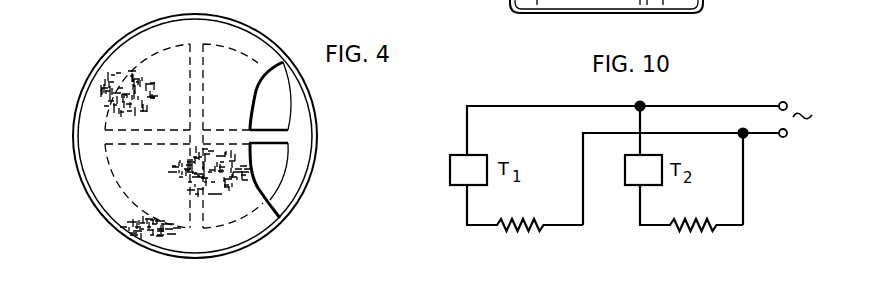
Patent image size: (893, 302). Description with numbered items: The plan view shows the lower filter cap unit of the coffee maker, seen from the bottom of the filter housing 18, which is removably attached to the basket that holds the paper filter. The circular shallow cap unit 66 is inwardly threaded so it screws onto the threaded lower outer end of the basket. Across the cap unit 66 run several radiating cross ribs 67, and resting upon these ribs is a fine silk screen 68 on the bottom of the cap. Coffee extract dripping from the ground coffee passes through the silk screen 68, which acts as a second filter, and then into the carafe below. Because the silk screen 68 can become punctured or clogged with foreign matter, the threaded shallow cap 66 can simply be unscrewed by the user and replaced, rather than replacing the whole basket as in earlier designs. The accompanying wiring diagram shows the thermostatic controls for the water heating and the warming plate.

The filter housing 18 is at (330, 123).
The shallow cap unit 66 is at (86, 82).
The cross ribs 67 is at (275, 133).
The silk screen 68 is at (142, 226).